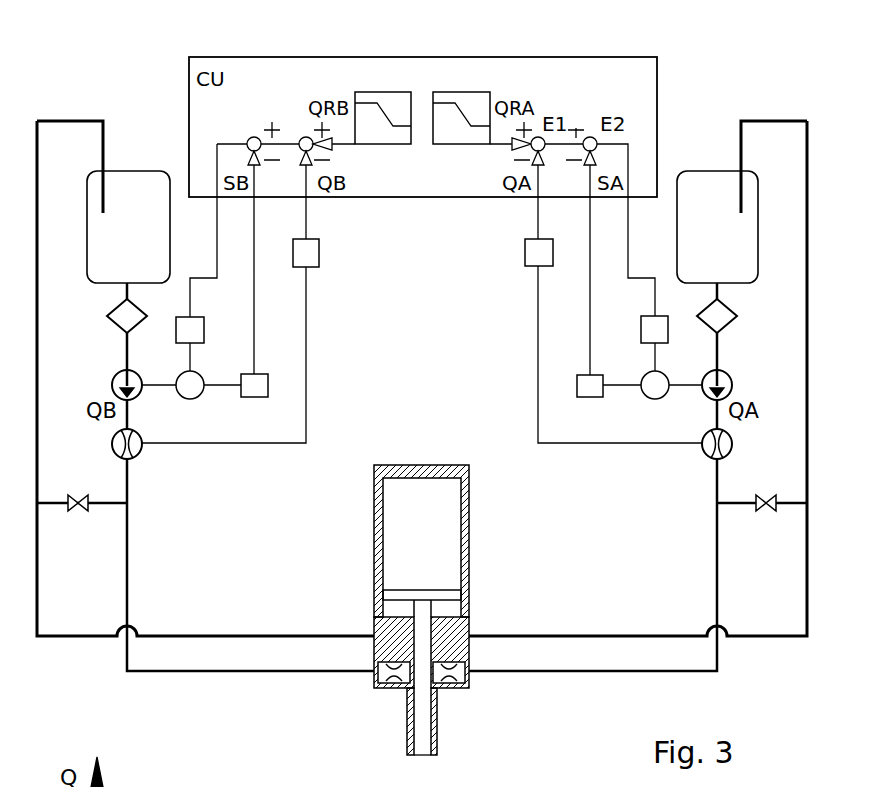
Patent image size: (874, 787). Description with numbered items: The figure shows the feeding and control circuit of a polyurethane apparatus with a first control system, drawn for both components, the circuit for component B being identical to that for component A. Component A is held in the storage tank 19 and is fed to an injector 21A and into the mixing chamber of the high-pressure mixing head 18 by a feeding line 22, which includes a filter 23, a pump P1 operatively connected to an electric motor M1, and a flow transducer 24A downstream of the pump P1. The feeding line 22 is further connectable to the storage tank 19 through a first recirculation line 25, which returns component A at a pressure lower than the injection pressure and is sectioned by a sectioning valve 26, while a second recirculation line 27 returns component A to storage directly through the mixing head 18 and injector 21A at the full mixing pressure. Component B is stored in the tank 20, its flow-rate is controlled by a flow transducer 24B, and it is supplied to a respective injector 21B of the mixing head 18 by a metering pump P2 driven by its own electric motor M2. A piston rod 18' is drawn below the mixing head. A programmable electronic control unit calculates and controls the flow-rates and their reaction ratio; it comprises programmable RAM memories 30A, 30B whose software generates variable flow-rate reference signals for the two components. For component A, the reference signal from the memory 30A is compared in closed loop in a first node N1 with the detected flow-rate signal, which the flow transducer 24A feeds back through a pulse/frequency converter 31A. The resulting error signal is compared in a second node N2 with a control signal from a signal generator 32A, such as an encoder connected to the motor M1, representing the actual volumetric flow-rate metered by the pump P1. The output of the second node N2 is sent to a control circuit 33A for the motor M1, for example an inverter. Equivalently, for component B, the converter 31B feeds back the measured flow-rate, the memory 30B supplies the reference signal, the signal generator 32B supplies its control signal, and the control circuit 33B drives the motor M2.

The high-pressure mixing head 18 is at (454, 576).
The piston rod 18' is at (385, 736).
The storage tank 19 is at (729, 254).
The tank 20 is at (140, 254).
The injector 21A is at (450, 687).
The injector 21B is at (393, 681).
The feeding line 22 is at (717, 580).
The filter 23 is at (737, 316).
The flow transducer 24A is at (732, 445).
The flow transducer 24B is at (113, 445).
The first recirculation line 25 is at (733, 505).
The sectioning valve 26 is at (770, 512).
The second recirculation line 27 is at (807, 603).
The programmable RAM memory 30A is at (472, 100).
The programmable RAM memory 30B is at (393, 100).
The pulse/frequency converter 31A is at (525, 252).
The pulse/frequency converter 31B is at (319, 251).
The signal generator 32A is at (577, 386).
The signal generator 32B is at (268, 386).
The control circuit 33A is at (644, 331).
The control circuit 33B is at (198, 330).
The electric motor M1 is at (655, 399).
The electric motor M2 is at (192, 399).
The first node N1 is at (538, 137).
The second node N2 is at (590, 137).
The pump P1 is at (733, 383).
The metering pump P2 is at (113, 382).